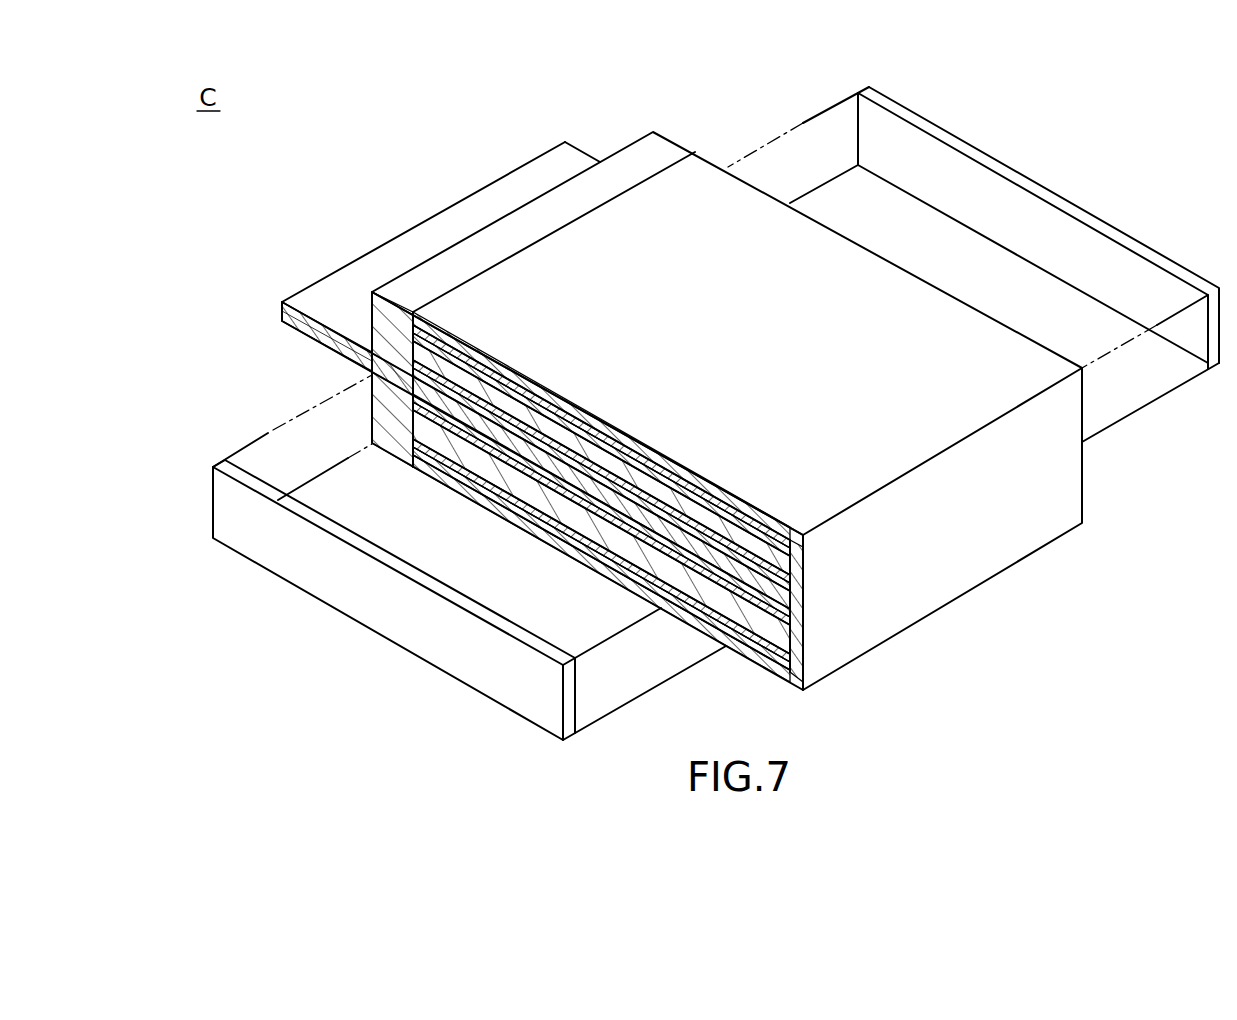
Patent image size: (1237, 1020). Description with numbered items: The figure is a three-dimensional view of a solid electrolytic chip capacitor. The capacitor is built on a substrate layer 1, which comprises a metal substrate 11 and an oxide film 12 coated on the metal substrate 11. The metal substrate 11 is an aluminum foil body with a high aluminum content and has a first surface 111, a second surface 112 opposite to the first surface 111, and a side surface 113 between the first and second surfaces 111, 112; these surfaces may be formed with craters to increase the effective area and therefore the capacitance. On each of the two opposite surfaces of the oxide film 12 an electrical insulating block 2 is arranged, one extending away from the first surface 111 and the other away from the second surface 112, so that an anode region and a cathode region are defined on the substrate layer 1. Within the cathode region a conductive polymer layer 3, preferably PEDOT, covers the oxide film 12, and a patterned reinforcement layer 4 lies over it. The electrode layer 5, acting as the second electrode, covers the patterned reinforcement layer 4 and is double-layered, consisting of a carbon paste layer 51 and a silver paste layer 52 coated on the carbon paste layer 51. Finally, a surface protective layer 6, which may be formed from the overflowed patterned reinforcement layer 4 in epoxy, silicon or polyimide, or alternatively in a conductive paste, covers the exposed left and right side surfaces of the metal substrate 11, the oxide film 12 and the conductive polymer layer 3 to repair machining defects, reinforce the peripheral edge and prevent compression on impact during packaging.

The substrate layer 1 is at (632, 432).
The metal substrate 11 is at (563, 436).
The first surface 111 is at (317, 296).
The second surface 112 is at (320, 355).
The side surface 113 is at (302, 322).
The oxide film 12 is at (722, 560).
The electrical insulating block 2 is at (392, 437).
The conductive polymer layer 3 is at (457, 462).
The patterned reinforcement layer 4 is at (531, 515).
The electrode layer 5 is at (601, 497).
The carbon paste layer 51 is at (660, 468).
The silver paste layer 52 is at (665, 403).
The surface protective layer 6 is at (1048, 196).